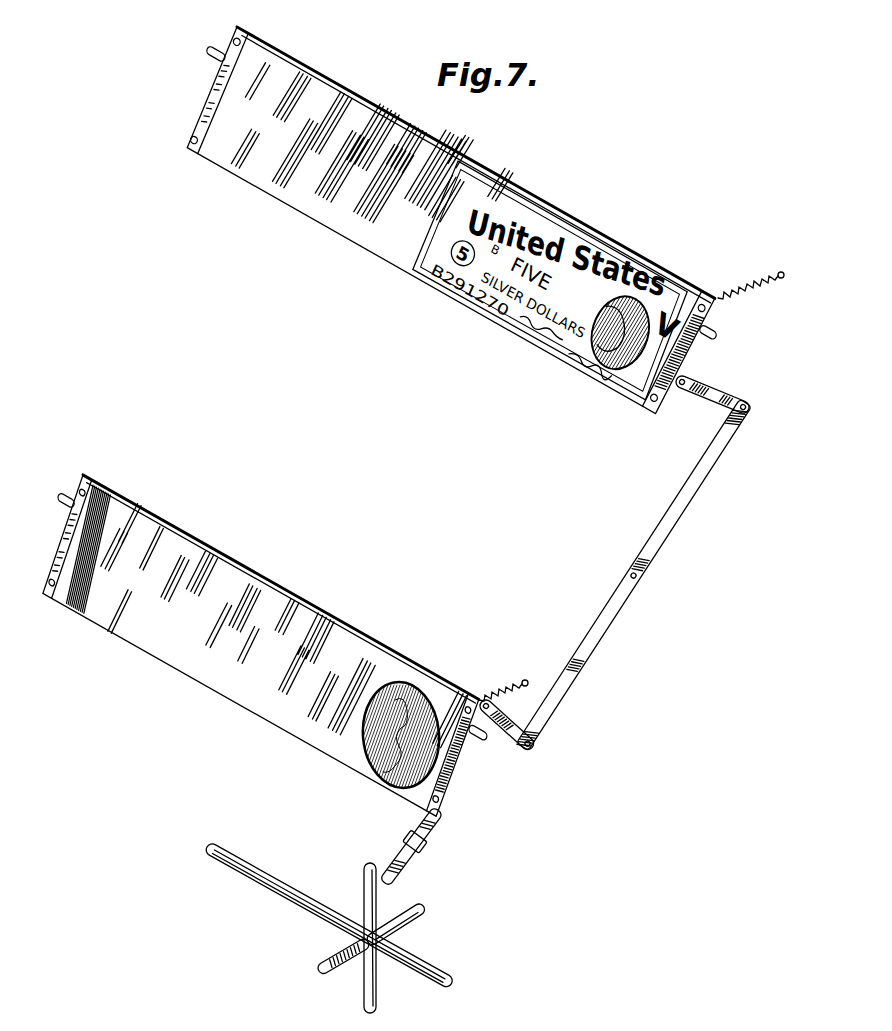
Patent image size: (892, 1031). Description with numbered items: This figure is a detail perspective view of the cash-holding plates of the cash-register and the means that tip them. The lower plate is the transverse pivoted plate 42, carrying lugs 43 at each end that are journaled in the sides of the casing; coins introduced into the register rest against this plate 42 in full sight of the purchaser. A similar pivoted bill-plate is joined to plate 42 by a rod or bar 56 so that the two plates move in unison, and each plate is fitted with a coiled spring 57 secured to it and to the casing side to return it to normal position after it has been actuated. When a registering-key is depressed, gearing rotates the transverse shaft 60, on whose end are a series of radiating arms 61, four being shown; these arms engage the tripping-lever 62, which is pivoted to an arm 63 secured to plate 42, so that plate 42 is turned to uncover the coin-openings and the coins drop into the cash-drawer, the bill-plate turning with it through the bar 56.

The pivoted plate 42 is at (261, 646).
The lugs 43 is at (270, 621).
The rod or bar 56 is at (615, 575).
The coiled springs 57 is at (631, 482).
The transverse shaft 60 is at (329, 915).
The radiating arms 61 is at (374, 953).
The tripping-lever 62 is at (410, 845).
The arm 63 is at (441, 835).